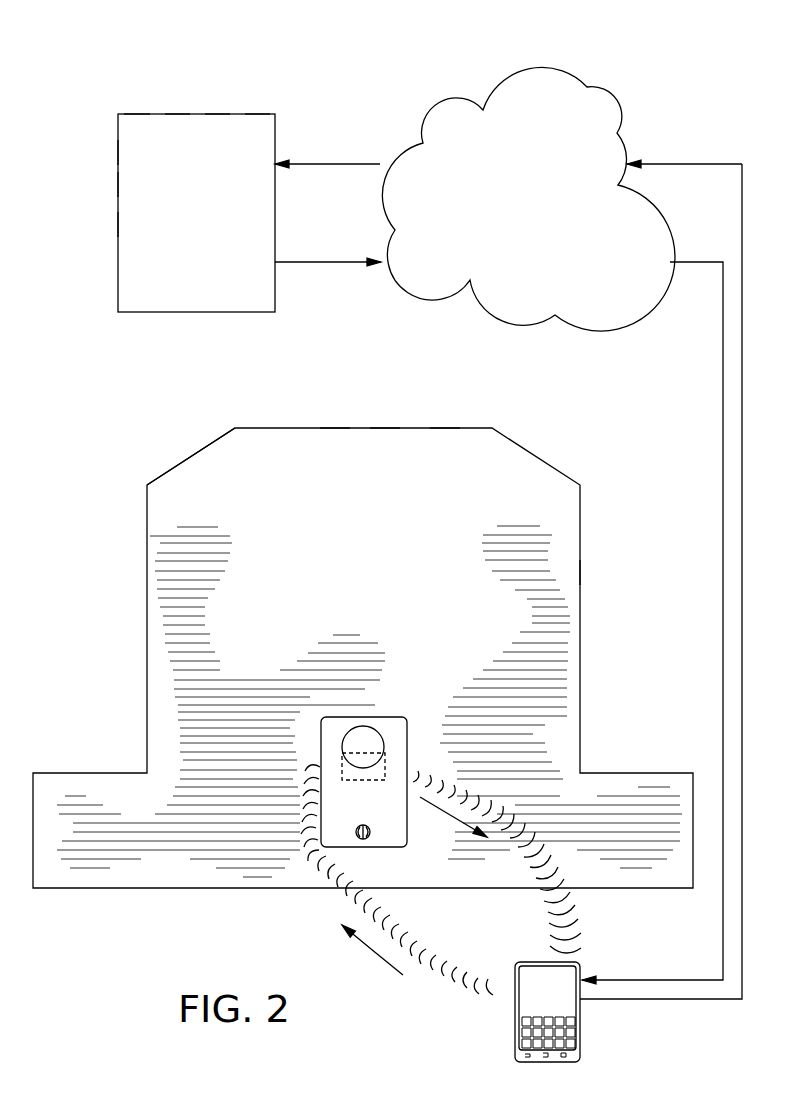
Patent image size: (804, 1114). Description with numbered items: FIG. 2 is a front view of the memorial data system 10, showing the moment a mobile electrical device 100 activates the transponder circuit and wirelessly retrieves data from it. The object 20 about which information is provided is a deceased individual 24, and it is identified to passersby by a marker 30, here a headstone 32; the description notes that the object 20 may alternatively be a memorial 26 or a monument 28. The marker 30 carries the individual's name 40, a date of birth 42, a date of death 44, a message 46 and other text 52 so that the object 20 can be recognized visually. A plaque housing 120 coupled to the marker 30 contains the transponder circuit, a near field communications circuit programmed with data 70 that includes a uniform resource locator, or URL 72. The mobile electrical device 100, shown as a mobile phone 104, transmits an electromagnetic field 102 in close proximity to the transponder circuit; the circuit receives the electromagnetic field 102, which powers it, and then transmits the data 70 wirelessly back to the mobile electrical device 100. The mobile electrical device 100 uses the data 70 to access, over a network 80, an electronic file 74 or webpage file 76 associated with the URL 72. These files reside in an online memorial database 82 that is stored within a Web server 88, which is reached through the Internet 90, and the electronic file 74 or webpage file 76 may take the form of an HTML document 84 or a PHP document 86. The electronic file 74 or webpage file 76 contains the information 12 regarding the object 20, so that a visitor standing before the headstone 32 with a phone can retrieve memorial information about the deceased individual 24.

The memorial data system 10 is at (628, 45).
The object 20 is at (655, 68).
The network 80 is at (665, 101).
The Internet 90 is at (516, 82).
The Web server 88 is at (140, 312).
The webpage file 76 is at (135, 114).
The data 70 is at (178, 114).
The information 12 is at (214, 114).
The electronic file 74 is at (254, 114).
The online memorial database 82 is at (118, 152).
The HTML document 84 is at (118, 183).
The PHP document 86 is at (118, 224).
The marker 30 is at (580, 519).
The headstone 32 is at (580, 572).
The monument 28 is at (333, 428).
The deceased individual 24 is at (385, 428).
The memorial 26 is at (445, 428).
The message 46 is at (225, 488).
The text 52 is at (223, 495).
The individual's name 40 is at (297, 552).
The date of birth 42 is at (231, 617).
The date of death 44 is at (493, 610).
The plaque housing 120 is at (322, 747).
The URL 72 is at (458, 800).
The electromagnetic field 102 is at (370, 953).
The mobile electrical device 100 is at (582, 1023).
The mobile phone 104 is at (580, 1057).